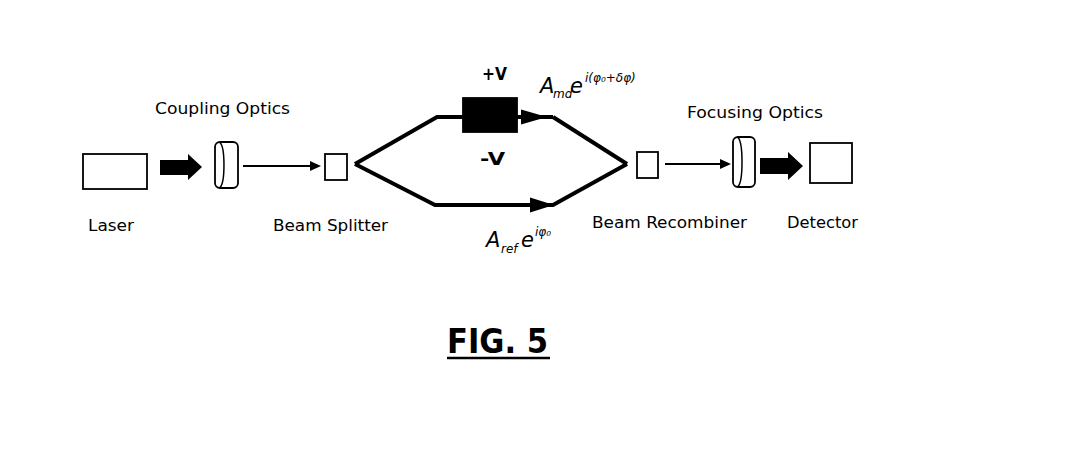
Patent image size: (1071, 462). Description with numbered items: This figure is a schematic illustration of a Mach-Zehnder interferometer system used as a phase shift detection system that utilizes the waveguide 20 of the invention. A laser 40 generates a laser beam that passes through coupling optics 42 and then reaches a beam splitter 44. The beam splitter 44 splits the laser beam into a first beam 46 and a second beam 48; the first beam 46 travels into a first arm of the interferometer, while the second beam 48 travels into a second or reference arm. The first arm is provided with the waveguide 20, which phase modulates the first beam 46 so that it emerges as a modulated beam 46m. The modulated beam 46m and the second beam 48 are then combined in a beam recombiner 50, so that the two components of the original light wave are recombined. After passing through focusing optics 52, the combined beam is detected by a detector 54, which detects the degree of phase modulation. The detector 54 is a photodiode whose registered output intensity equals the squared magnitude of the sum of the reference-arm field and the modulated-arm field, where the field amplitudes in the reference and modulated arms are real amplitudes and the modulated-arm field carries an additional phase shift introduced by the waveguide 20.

The waveguide 20 is at (468, 93).
The laser 40 is at (98, 153).
The coupling optics 42 is at (220, 192).
The beam splitter 44 is at (338, 148).
The first beam 46 is at (397, 137).
The modulated beam 46m is at (593, 133).
The second beam 48 is at (425, 207).
The beam recombiner 50 is at (647, 178).
The focusing optics 52 is at (752, 190).
The detector 54 is at (843, 163).